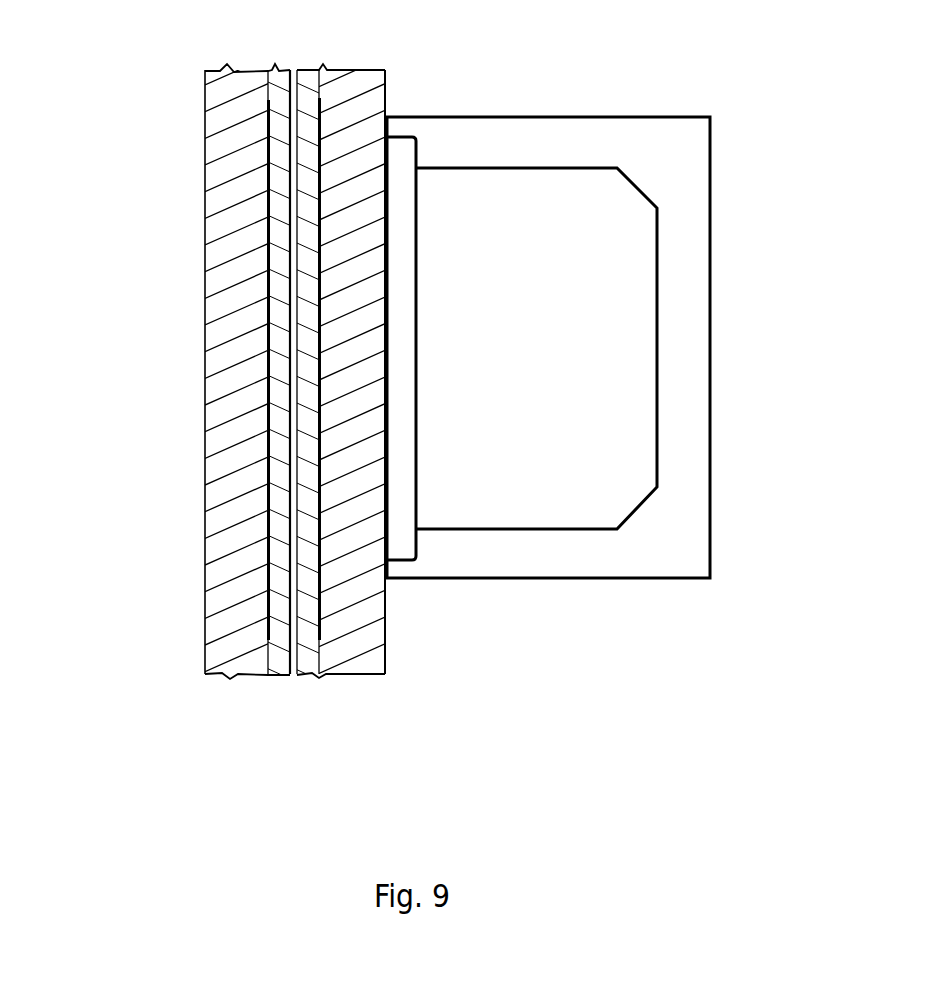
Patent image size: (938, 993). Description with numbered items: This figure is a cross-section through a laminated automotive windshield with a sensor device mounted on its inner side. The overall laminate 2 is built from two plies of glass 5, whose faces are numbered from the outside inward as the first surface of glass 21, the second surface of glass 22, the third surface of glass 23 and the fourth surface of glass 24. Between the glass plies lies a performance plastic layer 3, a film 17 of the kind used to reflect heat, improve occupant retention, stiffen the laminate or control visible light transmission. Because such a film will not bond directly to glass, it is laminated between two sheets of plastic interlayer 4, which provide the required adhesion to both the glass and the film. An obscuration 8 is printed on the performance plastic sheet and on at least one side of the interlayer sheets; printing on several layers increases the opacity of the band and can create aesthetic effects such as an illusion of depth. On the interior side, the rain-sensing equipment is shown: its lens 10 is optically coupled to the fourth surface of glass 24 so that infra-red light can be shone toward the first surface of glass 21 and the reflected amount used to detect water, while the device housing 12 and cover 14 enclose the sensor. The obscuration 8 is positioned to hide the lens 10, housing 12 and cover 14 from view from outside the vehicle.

The insulating glazing unit 2 is at (203, 394).
The performance plastic layer 3 is at (290, 66).
The plastic interlayer layer 4 is at (308, 677).
The glass 5 is at (234, 678).
The obscuration 8 is at (277, 125).
The lens 10 is at (418, 551).
The device housing 12 is at (659, 487).
The cover 14 is at (713, 385).
The film 17 is at (299, 583).
The first surface of glass 21 is at (203, 140).
The second surface of glass 22 is at (266, 83).
The third surface of glass 23 is at (329, 92).
The fourth surface of glass 24 is at (390, 671).